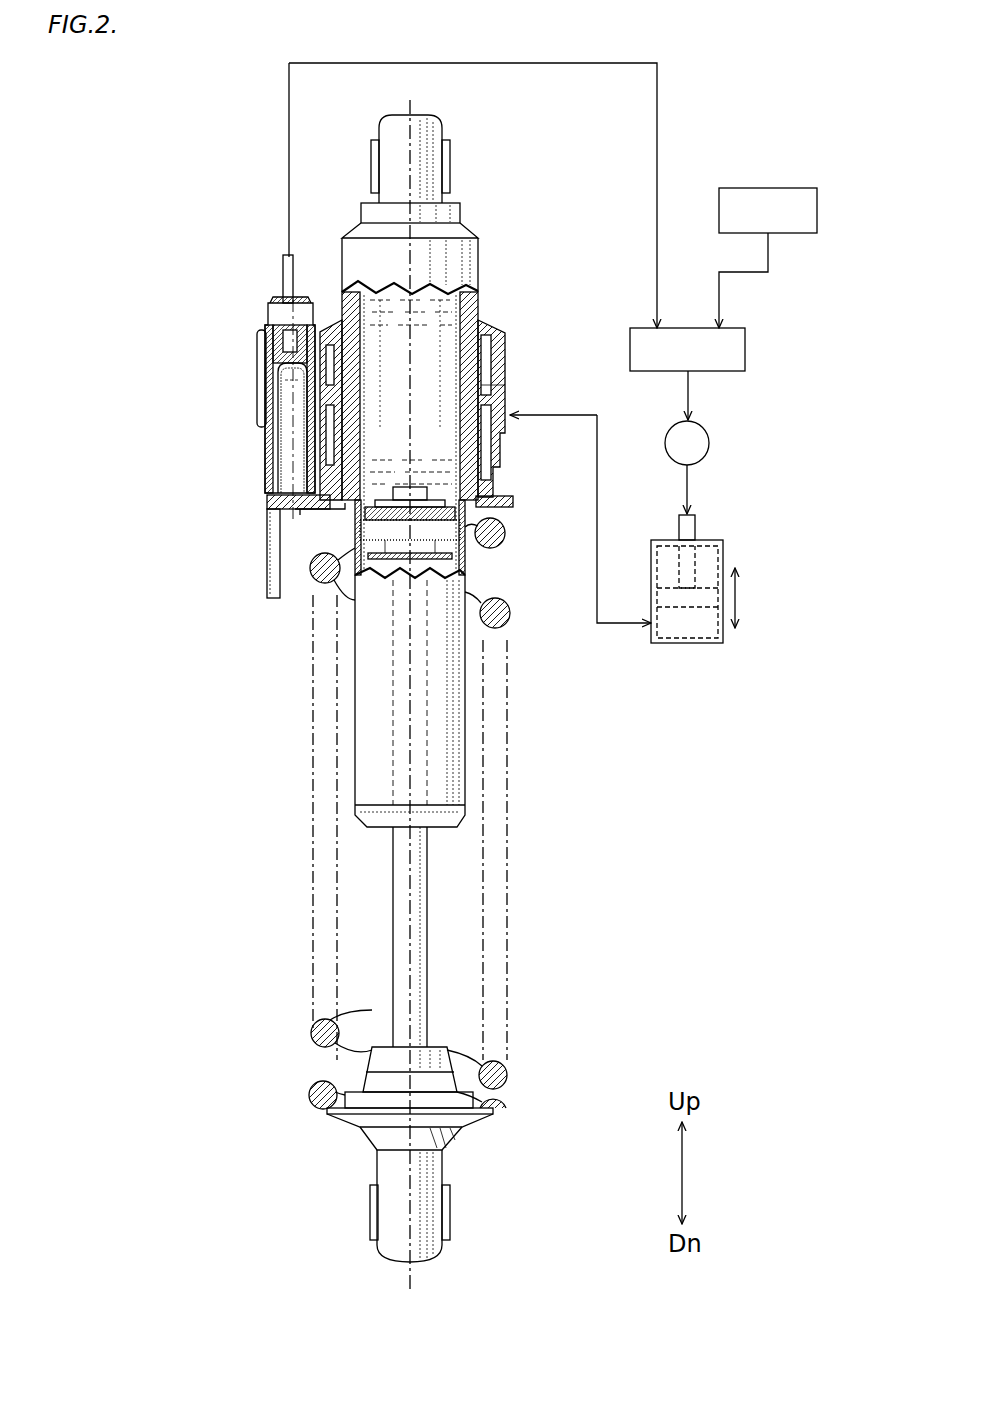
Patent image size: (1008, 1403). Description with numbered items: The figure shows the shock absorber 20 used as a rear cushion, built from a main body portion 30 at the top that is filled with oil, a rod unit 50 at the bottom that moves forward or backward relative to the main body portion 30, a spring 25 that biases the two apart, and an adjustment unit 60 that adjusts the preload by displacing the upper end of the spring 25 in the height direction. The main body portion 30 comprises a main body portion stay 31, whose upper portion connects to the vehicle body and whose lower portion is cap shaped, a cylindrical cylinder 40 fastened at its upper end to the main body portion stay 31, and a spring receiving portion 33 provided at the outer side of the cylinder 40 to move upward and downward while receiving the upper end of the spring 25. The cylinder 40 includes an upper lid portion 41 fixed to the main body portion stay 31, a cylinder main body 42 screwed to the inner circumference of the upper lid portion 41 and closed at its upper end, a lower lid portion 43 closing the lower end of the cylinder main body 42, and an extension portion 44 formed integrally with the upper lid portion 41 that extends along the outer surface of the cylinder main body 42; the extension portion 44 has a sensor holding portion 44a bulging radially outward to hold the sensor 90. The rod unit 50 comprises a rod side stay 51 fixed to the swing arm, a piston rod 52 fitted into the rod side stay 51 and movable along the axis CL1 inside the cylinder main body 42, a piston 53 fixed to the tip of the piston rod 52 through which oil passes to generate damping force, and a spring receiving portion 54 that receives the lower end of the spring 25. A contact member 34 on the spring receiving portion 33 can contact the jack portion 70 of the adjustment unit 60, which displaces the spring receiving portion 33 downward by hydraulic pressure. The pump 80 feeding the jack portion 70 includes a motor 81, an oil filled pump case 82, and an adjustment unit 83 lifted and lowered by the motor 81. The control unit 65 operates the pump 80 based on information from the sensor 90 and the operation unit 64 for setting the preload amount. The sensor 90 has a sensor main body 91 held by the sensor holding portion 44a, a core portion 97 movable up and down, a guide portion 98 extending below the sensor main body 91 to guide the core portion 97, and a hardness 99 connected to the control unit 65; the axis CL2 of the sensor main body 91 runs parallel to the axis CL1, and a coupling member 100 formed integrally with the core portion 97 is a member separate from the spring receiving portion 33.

The shock absorber 20 is at (160, 173).
The spring 25 is at (507, 876).
The main body portion 30 is at (472, 223).
The main body portion stay 31 is at (424, 116).
The spring receiving portion 33 is at (505, 505).
The contact member 34 is at (490, 497).
The cylinder 40 is at (433, 386).
The upper lid portion 41 is at (342, 252).
The cylinder main body 42 is at (458, 320).
The lower lid portion 43 is at (377, 828).
The extension portion 44 is at (505, 345).
The sensor holding portion 44a is at (258, 352).
The rod unit 50 is at (400, 1218).
The rod side stay 51 is at (445, 1165).
The piston rod 52 is at (427, 918).
The piston 53 is at (470, 556).
The spring receiving portion 54 is at (330, 1112).
The adjustment unit 60 is at (822, 170).
The operation unit 64 is at (768, 188).
The control unit 65 is at (735, 328).
The jack portion 70 is at (492, 385).
The pump 80 is at (747, 532).
The motor 81 is at (710, 440).
The pump case 82 is at (705, 540).
The adjustment unit 83 is at (724, 571).
The sensor 90 is at (232, 349).
The sensor main body 91 is at (265, 440).
The core portion 97 is at (283, 397).
The guide portion 98 is at (268, 548).
The hardness 99 is at (282, 270).
The coupling member 100 is at (300, 518).
The axis CL1 is at (412, 1275).
The axis CL2 is at (290, 480).